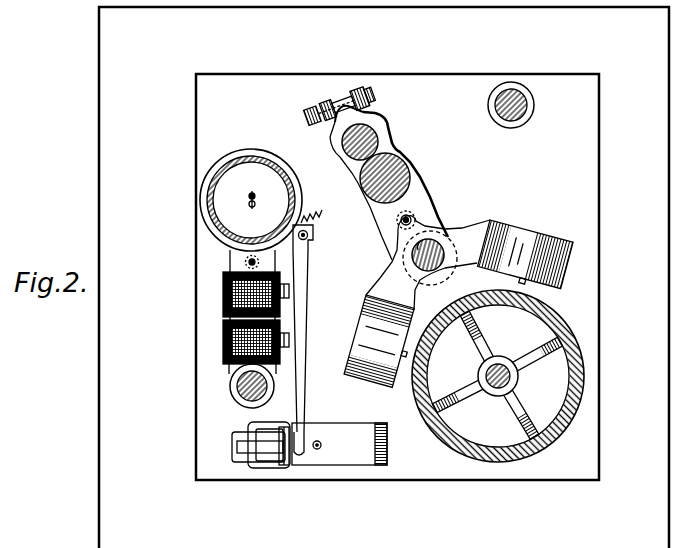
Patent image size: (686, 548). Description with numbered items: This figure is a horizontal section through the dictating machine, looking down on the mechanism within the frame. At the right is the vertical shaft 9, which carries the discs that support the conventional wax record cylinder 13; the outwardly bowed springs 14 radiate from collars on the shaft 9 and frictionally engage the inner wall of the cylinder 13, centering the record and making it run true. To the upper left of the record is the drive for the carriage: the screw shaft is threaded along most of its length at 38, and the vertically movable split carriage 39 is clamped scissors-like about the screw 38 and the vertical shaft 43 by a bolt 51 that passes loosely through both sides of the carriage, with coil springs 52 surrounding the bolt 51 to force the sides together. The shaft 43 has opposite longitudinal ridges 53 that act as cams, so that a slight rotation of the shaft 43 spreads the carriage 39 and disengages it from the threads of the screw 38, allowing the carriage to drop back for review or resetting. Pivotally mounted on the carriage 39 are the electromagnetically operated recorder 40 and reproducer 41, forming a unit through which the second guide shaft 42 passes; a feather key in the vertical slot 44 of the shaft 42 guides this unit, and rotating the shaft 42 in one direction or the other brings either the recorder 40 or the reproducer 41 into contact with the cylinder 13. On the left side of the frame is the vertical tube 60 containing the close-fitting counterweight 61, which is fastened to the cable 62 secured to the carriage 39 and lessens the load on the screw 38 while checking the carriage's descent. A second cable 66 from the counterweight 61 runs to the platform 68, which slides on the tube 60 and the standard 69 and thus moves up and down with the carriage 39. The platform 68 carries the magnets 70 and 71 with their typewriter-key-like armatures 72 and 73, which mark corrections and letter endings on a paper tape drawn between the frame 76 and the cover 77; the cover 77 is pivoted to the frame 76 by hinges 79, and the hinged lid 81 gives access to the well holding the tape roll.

The vertical shaft 9 is at (488, 375).
The wax record cylinder 13 is at (578, 368).
The springs 14 is at (532, 350).
The screw threads 38 is at (387, 170).
The split carriage 39 is at (417, 187).
The recorder 40 is at (540, 222).
The reproducer 41 is at (358, 372).
The vertical shaft 42 is at (415, 262).
The vertical shaft 43 is at (367, 115).
The vertical slot 44 is at (433, 226).
The bolt 51 is at (310, 114).
The coil springs 52 is at (364, 86).
The longitudinal ridges 53 is at (373, 133).
The vertical tube 60 is at (222, 178).
The counterweight 61 is at (226, 192).
The cable 62 is at (246, 200).
The second cable 66 is at (245, 262).
The platform 68 is at (237, 265).
The standard 69 is at (240, 386).
The magnet 70 is at (240, 290).
The magnet 71 is at (225, 338).
The armature key 72 is at (303, 303).
The armature key 73 is at (304, 458).
The frame 76 is at (235, 443).
The cover 77 is at (288, 468).
The hinges 79 is at (258, 468).
The hinged lid 81 is at (370, 452).